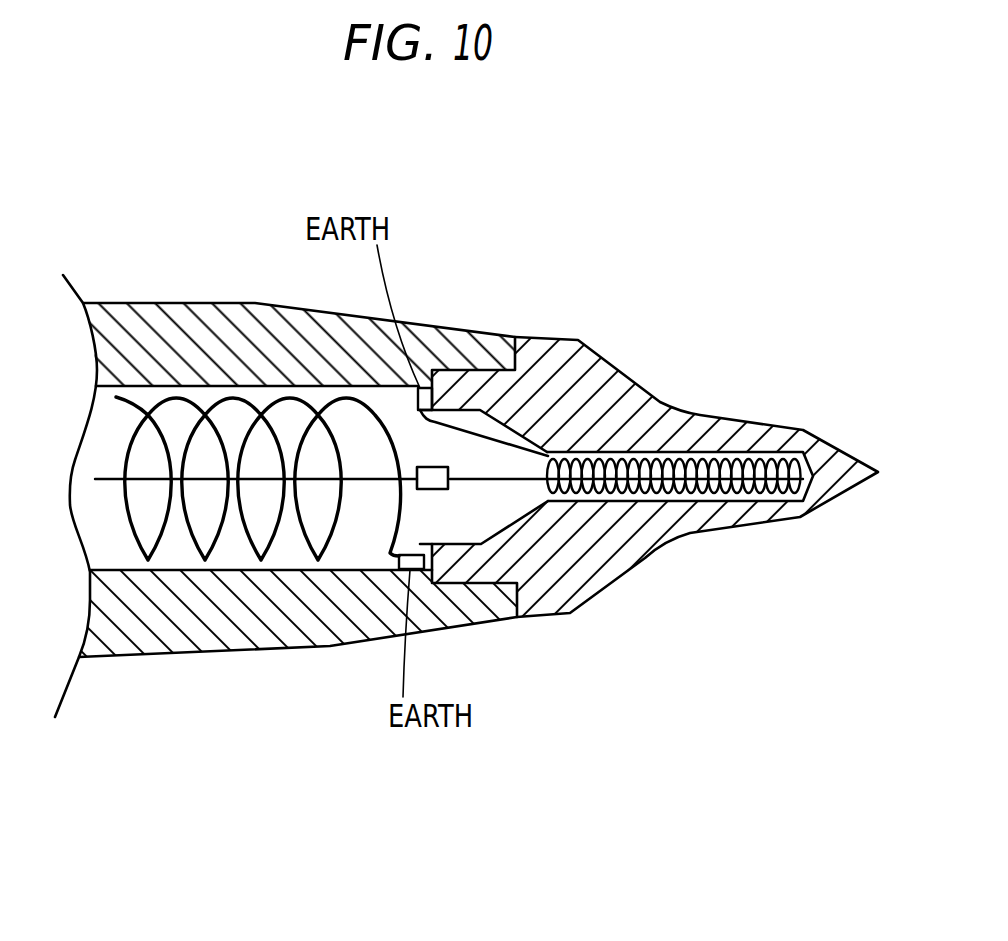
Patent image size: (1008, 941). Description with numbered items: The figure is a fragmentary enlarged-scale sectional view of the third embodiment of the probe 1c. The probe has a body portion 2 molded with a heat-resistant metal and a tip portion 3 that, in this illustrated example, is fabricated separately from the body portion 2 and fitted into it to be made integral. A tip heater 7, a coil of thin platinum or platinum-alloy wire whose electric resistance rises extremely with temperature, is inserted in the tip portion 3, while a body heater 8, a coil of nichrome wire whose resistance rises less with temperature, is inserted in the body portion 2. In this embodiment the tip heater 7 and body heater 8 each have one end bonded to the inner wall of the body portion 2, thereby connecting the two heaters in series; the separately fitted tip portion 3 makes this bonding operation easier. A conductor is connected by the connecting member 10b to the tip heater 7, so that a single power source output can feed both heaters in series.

The probe 1c is at (457, 303).
The body portion 2 is at (150, 657).
The tip portion 3 is at (640, 565).
The tip heater 7 is at (655, 452).
The body heater 8 is at (181, 397).
The connecting member 10b is at (445, 490).